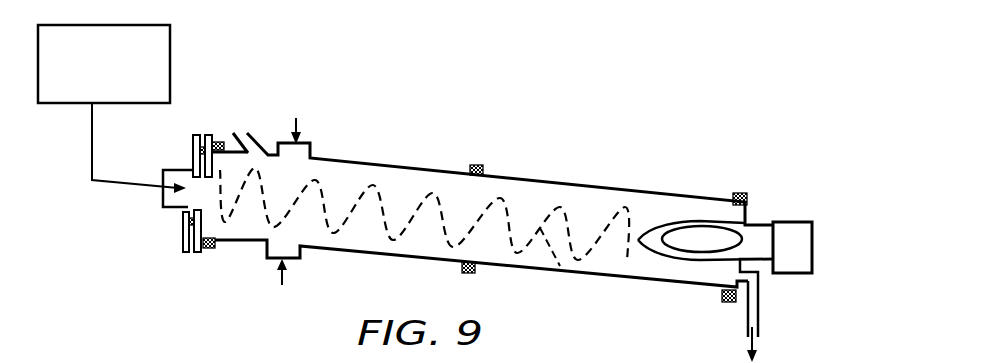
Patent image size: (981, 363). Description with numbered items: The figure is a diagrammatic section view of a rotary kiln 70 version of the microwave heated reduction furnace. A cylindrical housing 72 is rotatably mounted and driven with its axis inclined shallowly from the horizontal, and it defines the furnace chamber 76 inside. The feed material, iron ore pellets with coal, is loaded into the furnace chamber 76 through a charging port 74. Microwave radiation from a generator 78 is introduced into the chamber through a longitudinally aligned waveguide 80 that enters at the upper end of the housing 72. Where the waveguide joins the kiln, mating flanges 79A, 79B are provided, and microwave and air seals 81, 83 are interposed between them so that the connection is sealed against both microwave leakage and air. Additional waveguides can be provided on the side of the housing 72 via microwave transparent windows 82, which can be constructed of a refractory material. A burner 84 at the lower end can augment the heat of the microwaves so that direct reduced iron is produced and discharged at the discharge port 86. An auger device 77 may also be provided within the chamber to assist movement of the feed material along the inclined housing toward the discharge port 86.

The rotary kiln 70 is at (516, 155).
The cylindrical housing 72 is at (395, 168).
The charging port 74 is at (228, 123).
The furnace chamber 76 is at (479, 213).
The auger device 77 is at (560, 268).
The generator 78 is at (172, 64).
The mating flange 79A is at (190, 243).
The mating flange 79B is at (198, 253).
The waveguide 80 is at (172, 223).
The microwave seal 81 is at (200, 229).
The microwave transparent windows 82 is at (312, 152).
The air seal 83 is at (183, 238).
The burner 84 is at (782, 220).
The discharge port 86 is at (743, 317).